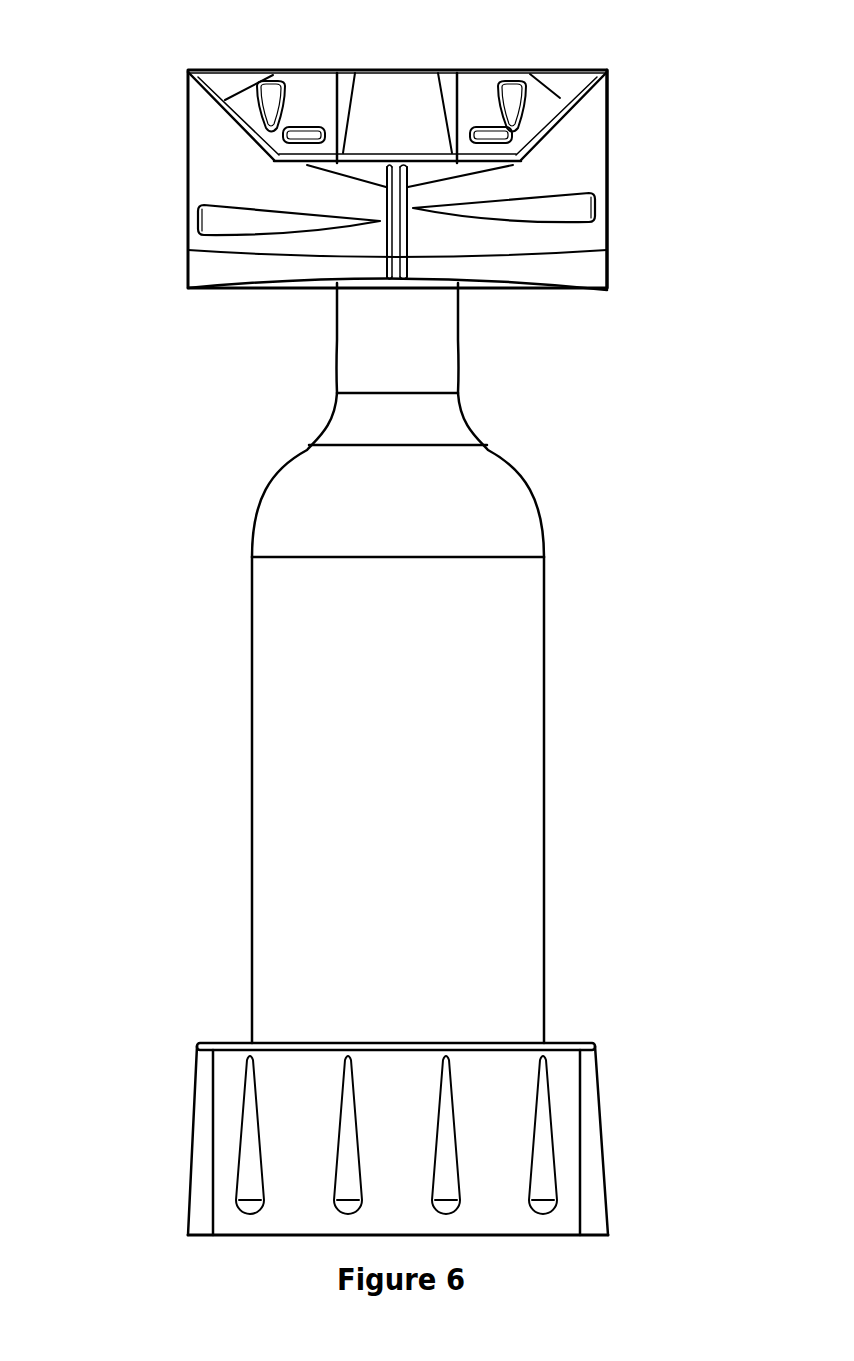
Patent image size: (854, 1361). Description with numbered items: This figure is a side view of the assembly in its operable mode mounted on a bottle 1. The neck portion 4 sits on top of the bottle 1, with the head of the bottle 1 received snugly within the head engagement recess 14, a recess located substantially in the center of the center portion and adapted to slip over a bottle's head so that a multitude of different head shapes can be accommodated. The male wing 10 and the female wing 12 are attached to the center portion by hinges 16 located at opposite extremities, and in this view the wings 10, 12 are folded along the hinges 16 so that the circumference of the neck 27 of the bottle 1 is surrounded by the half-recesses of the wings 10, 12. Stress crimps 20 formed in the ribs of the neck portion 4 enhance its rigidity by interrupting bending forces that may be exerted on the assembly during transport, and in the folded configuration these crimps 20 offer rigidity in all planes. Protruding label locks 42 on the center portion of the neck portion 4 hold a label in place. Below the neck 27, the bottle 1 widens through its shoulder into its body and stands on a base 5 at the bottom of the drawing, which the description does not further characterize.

The bottle 1 is at (530, 750).
The neck portion 4 is at (638, 233).
The base 5 is at (595, 1145).
The male wing 10 is at (192, 172).
The female wing 12 is at (612, 162).
The head engagement recess 14 is at (398, 93).
The hinges 16 is at (186, 71).
The stress crimps 20 is at (242, 225).
The neck 27 is at (440, 350).
The label locks 42 is at (308, 127).